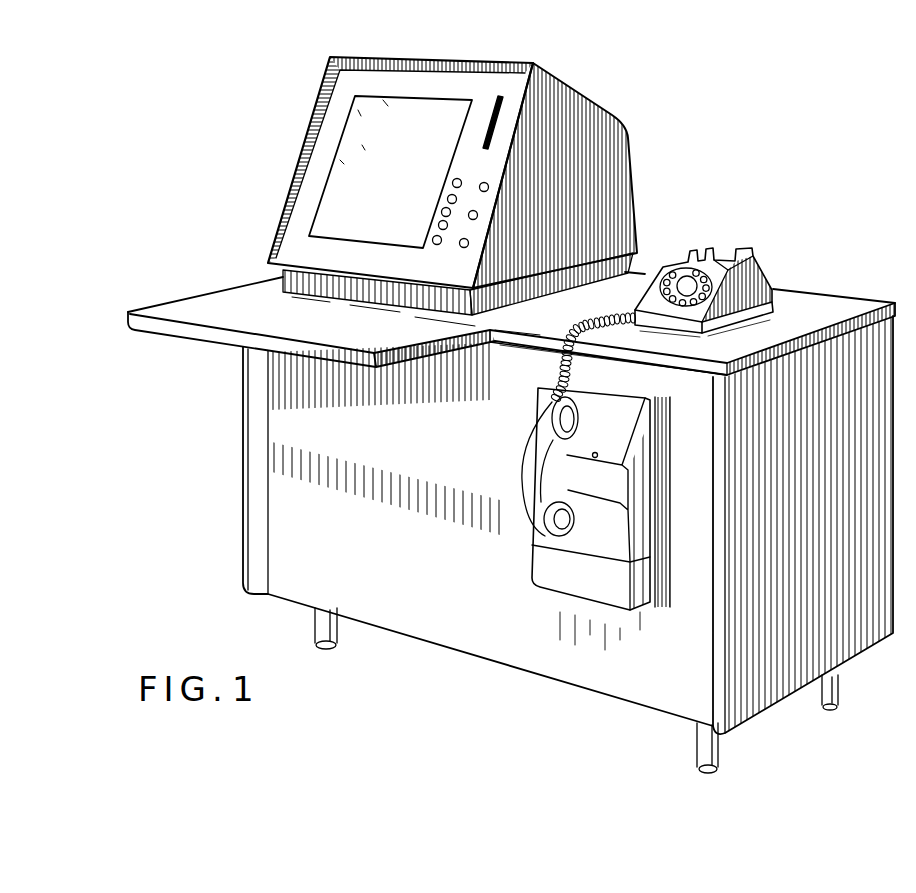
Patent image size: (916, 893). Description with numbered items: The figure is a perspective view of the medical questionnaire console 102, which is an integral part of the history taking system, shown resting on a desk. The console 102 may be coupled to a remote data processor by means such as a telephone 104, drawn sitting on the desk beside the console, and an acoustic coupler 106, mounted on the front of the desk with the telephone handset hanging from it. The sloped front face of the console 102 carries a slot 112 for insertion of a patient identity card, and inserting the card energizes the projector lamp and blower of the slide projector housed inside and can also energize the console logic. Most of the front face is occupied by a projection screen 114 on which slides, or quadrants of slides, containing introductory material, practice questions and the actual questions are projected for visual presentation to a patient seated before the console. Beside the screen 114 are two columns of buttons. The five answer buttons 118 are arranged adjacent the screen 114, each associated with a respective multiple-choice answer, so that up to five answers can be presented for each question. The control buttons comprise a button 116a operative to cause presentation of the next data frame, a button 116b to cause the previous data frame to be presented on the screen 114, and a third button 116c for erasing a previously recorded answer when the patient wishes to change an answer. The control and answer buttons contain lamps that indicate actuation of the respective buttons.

The medical questionnaire console 102 is at (677, 228).
The telephone 104 is at (761, 277).
The acoustic coupler 106 is at (575, 543).
The slot 112 is at (490, 102).
The projection screen 114 is at (418, 125).
The button 116a is at (488, 187).
The button 116b is at (477, 215).
The third button 116c is at (468, 243).
The answer buttons 118 is at (433, 240).